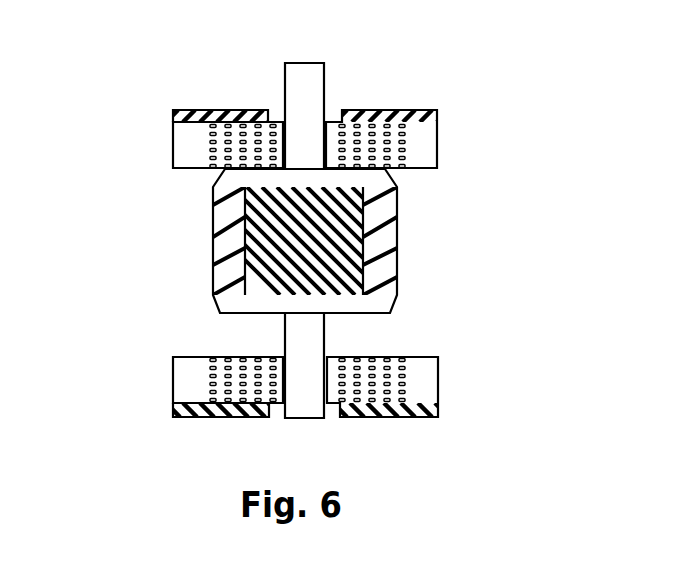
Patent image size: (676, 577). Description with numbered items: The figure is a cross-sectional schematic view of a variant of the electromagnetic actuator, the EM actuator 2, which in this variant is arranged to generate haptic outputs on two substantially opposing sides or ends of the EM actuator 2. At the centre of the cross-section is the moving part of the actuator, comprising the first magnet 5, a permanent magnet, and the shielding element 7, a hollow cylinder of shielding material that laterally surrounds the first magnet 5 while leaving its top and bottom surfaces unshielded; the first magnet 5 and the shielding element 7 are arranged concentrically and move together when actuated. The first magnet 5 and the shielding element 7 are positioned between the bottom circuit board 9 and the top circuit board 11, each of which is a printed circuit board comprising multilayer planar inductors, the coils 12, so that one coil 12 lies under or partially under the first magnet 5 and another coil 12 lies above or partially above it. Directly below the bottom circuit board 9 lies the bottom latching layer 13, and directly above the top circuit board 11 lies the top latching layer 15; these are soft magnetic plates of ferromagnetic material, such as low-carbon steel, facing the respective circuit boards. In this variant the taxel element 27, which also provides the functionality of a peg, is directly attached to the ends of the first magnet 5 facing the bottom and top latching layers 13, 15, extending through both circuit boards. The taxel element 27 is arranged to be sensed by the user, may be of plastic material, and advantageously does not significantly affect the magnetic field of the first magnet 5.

The EM actuator 2 is at (401, 438).
The first magnet 5 is at (248, 285).
The shielding element 7 is at (223, 228).
The bottom circuit board 9 is at (183, 377).
The top circuit board 11 is at (182, 158).
The coil 12 is at (405, 125).
The bottom latching layer 13 is at (175, 408).
The top latching layer 15 is at (177, 113).
The taxel element 27 is at (300, 91).